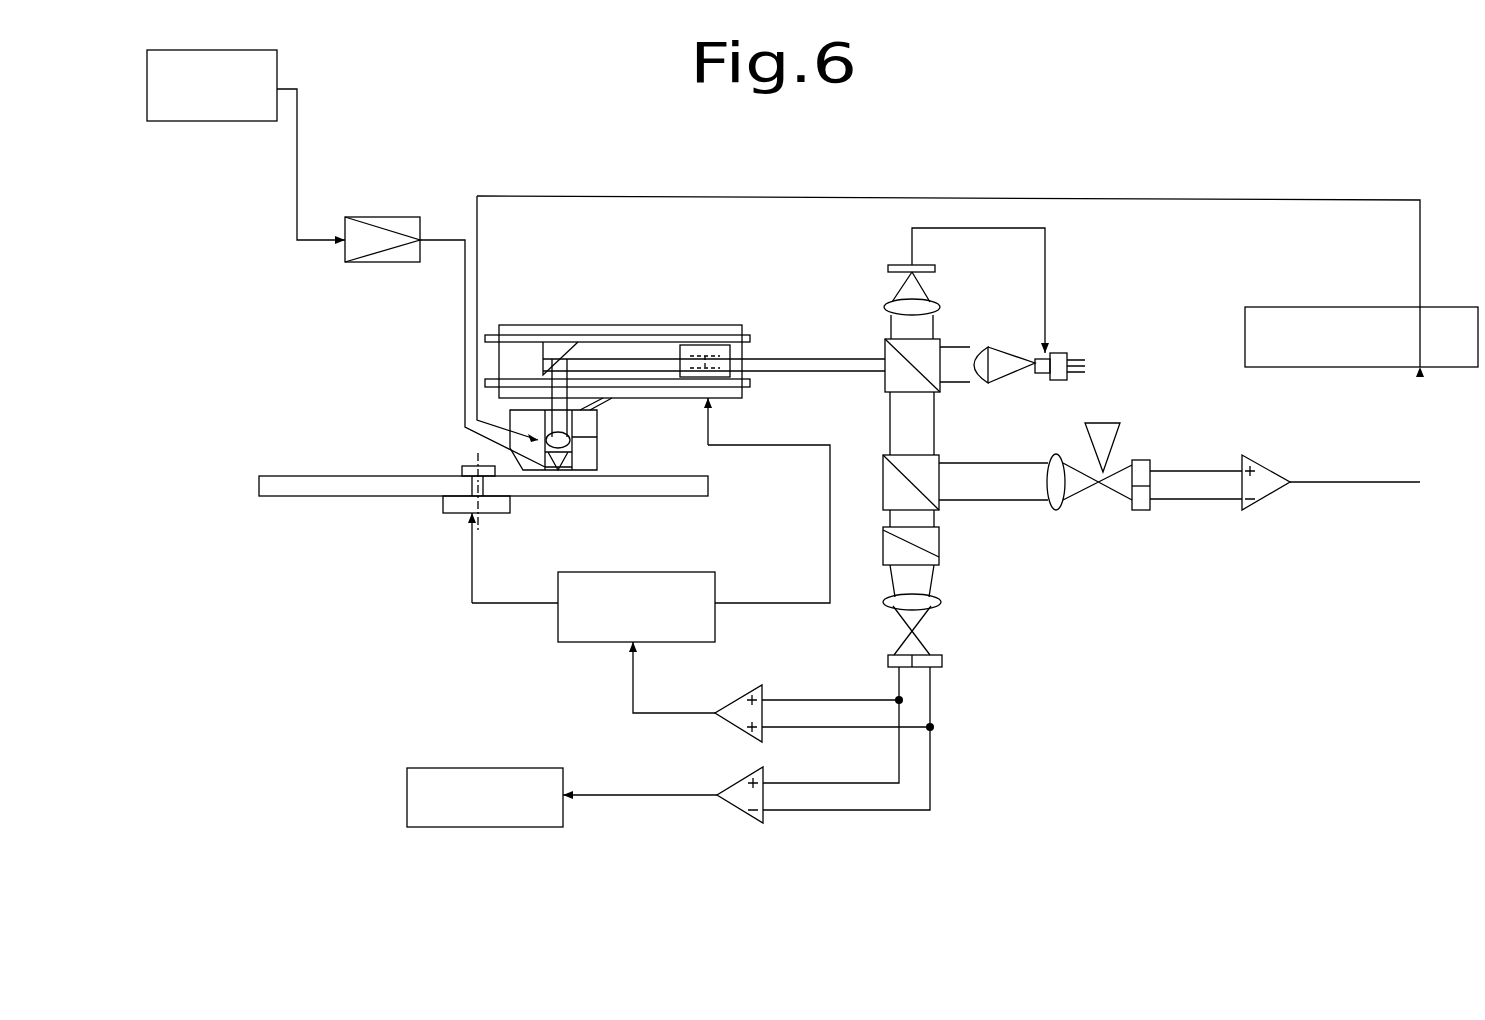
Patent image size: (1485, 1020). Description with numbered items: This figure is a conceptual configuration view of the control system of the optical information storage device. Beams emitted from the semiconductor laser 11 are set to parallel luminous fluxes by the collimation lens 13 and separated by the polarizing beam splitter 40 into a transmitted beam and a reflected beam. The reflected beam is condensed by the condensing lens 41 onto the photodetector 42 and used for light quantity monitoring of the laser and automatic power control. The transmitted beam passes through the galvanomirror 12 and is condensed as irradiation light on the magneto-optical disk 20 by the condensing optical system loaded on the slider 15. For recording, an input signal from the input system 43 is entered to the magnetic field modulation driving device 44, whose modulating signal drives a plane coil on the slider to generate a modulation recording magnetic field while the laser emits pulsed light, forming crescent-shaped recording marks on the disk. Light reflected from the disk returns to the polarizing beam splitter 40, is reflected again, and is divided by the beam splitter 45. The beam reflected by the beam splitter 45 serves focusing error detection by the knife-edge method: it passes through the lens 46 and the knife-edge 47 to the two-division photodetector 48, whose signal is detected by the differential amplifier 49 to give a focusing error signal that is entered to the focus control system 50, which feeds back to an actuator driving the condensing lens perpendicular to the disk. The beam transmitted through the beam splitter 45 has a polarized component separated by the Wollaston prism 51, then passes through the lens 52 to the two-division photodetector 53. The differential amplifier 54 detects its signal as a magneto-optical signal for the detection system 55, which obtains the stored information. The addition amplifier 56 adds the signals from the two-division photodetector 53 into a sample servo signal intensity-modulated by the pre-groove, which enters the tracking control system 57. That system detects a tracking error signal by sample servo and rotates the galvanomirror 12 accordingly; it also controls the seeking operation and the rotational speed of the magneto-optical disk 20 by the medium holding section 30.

The semiconductor laser 11 is at (1058, 377).
The galvanomirror 12 is at (715, 345).
The collimation lens 13 is at (973, 355).
The slider 15 is at (590, 453).
The magneto-optical disk 20 is at (677, 497).
The medium holding section 30 is at (449, 505).
The polarizing beam splitter 40 is at (890, 382).
The condensing lens 41 is at (888, 307).
The photodetector 42 is at (888, 269).
The input system 43 is at (215, 121).
The magnetic field modulation driving device 44 is at (383, 262).
The beam splitter 45 is at (932, 515).
The lens 46 is at (1056, 510).
The knife-edge 47 is at (1108, 443).
The two-division photodetector 48 is at (1145, 510).
The differential amplifier 49 is at (1275, 497).
The focus control system 50 is at (1352, 305).
The Wollaston prism 51 is at (932, 560).
The lens 52 is at (938, 600).
The two-division photodetector 53 is at (942, 660).
The differential amplifier 54 is at (730, 807).
The detection system 55 is at (532, 827).
The addition amplifier 56 is at (725, 725).
The tracking control system 57 is at (573, 642).